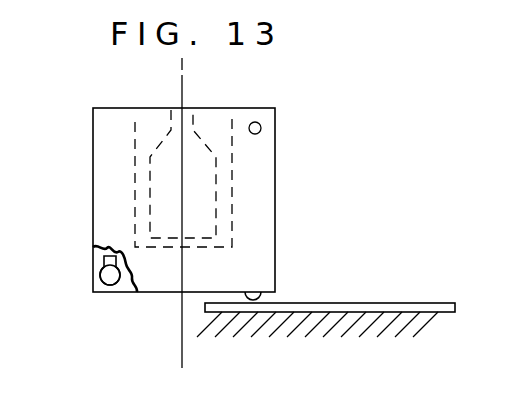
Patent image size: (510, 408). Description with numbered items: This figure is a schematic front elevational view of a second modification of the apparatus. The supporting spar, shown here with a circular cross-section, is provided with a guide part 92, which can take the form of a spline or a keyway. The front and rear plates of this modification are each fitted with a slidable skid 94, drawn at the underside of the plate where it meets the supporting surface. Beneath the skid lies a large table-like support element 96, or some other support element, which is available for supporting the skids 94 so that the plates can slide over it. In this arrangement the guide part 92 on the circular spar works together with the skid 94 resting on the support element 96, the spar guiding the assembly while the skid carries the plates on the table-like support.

The guide part 92 is at (93, 247).
The slidable skid 94 is at (262, 299).
The table-like support element 96 is at (413, 309).